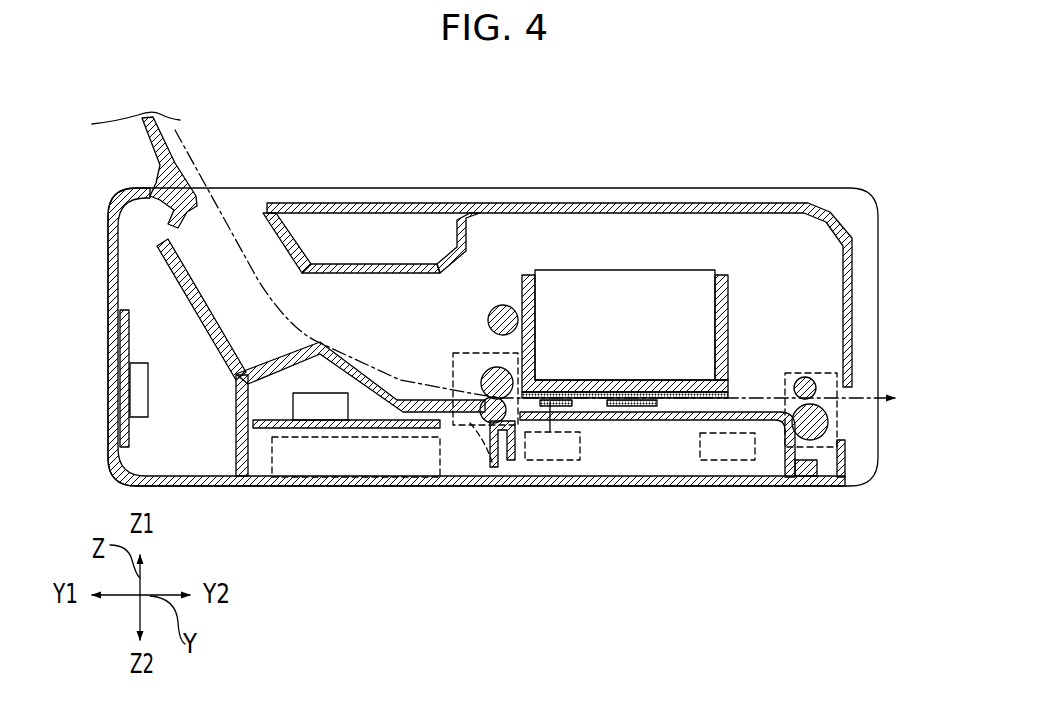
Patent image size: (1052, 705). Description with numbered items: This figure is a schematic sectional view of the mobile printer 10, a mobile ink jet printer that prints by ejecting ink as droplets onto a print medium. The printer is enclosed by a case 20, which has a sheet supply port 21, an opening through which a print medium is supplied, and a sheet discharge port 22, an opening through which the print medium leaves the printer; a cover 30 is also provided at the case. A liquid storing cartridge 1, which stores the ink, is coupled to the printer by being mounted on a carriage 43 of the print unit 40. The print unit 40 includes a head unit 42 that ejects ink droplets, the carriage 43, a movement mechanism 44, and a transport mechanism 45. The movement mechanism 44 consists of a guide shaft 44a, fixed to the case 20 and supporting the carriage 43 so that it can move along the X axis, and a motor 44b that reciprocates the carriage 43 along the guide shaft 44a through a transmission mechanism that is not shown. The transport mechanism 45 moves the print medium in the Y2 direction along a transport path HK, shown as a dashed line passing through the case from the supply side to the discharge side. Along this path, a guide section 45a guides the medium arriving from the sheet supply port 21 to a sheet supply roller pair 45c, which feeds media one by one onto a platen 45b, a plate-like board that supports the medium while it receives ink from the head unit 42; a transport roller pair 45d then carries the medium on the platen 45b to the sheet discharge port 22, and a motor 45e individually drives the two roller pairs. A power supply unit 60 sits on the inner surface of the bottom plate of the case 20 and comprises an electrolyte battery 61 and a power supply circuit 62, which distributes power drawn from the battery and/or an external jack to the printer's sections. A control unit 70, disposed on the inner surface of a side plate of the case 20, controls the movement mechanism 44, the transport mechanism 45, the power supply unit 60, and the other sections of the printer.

The liquid storing cartridge 1 is at (580, 270).
The mobile printer 10 is at (858, 186).
The case 20 is at (420, 207).
The sheet supply port 21 is at (243, 227).
The sheet discharge port 22 is at (847, 422).
The cover 30 is at (148, 138).
The transport path HK is at (200, 171).
The print unit 40 is at (659, 250).
The head unit 42 is at (640, 378).
The carriage 43 is at (722, 270).
The movement mechanism 44 is at (496, 256).
The guide shaft 44a is at (490, 303).
The motor 44b is at (550, 378).
The transport mechanism 45 is at (612, 487).
The guide section 45a is at (387, 405).
The platen 45b is at (533, 440).
The sheet supply roller pair 45c is at (638, 423).
The transport roller pair 45d is at (728, 460).
The motor 45e is at (787, 464).
The power supply unit 60 is at (346, 497).
The electrolyte battery 61 is at (400, 460).
The power supply circuit 62 is at (327, 430).
The control unit 70 is at (142, 425).